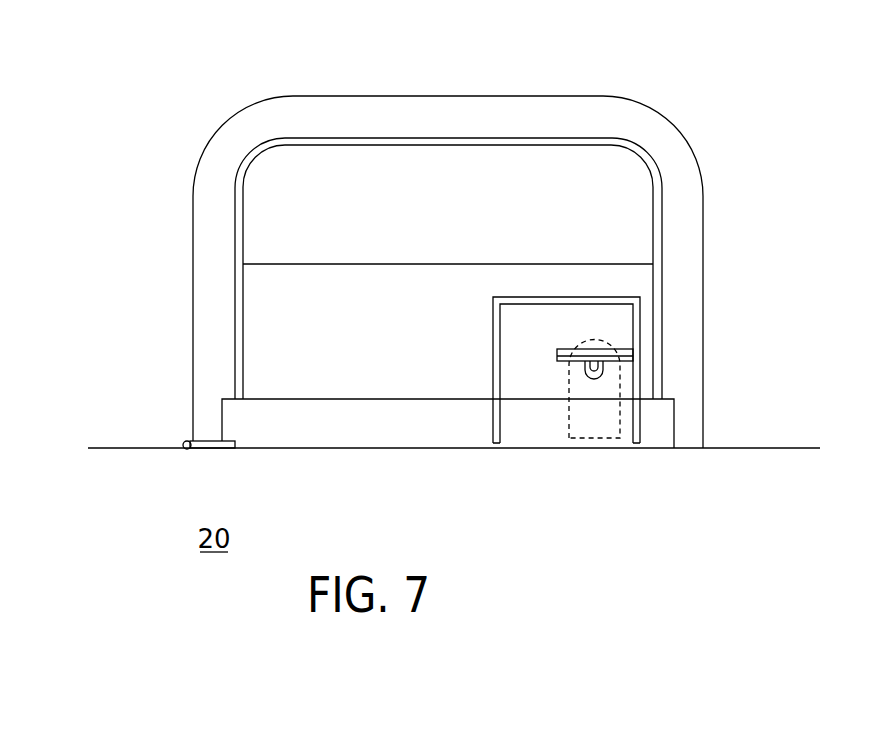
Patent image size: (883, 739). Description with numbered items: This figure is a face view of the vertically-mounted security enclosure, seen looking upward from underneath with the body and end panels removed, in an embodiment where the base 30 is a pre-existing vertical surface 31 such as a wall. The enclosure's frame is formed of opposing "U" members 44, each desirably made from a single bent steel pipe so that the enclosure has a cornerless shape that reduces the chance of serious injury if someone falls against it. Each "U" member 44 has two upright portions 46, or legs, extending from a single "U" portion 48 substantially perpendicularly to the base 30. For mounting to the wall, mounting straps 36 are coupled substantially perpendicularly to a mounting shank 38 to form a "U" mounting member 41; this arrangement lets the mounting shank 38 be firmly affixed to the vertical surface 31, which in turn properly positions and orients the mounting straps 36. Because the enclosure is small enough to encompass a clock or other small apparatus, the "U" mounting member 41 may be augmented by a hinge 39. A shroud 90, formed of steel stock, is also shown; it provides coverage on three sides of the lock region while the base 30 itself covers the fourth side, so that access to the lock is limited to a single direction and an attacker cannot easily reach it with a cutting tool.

The base 30 is at (757, 448).
The vertical surface 31 is at (790, 448).
The mounting straps 36 is at (602, 420).
The mounting shank 38 is at (613, 445).
The hinge 39 is at (184, 445).
The "U" mounting member 41 is at (587, 420).
The "U" member 44 is at (213, 223).
The upright portions 46 is at (207, 350).
The "U" portion 48 is at (407, 110).
The shroud 90 is at (493, 428).